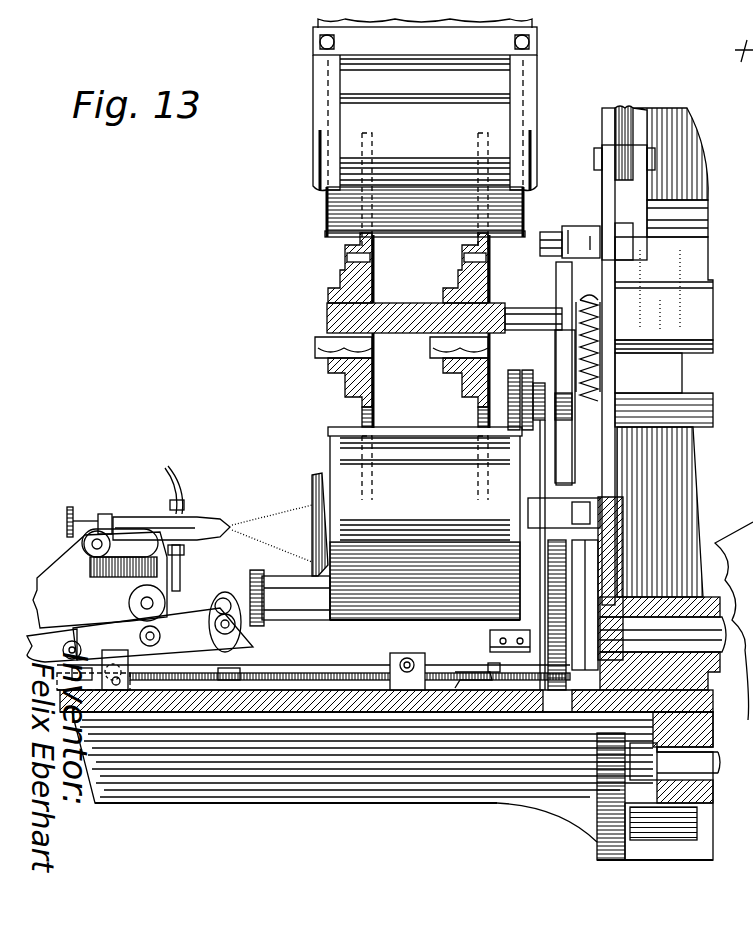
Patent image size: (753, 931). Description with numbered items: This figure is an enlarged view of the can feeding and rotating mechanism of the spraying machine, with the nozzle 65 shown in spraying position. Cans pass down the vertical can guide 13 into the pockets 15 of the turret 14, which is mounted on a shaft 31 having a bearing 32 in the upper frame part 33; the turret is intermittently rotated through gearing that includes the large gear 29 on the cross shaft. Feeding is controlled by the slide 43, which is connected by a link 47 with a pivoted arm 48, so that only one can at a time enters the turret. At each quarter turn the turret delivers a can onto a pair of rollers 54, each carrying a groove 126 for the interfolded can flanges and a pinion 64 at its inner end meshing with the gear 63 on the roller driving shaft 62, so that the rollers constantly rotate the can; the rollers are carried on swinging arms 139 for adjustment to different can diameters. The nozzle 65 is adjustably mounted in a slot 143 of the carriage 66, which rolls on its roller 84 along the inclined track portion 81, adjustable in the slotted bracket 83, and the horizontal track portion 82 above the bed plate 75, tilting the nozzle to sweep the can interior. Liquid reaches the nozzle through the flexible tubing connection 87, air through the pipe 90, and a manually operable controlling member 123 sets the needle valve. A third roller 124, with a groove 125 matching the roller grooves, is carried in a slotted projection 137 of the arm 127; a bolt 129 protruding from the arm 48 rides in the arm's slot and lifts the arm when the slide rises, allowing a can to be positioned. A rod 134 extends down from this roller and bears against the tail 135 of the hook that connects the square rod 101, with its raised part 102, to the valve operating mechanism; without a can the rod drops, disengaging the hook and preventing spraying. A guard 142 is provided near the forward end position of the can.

The vertical can guide 13 is at (322, 78).
The turret 14 is at (376, 246).
The pocket 15 is at (361, 418).
The large gear 29 is at (612, 812).
The shaft 31 is at (420, 325).
The bearing 32 is at (670, 305).
The upper frame part 33 is at (612, 384).
The slide 43 is at (625, 125).
The link 47 is at (612, 194).
The arm 48 is at (584, 242).
The roller 54 is at (285, 580).
The roller driving shaft 62 is at (646, 632).
The gear 63 is at (700, 678).
The pinion 64 is at (566, 578).
The nozzle 65 is at (132, 519).
The carriage 66 is at (56, 572).
The bed plate 75 is at (420, 714).
The inclined track portion 81 is at (172, 624).
The horizontal track portion 82 is at (48, 646).
The slotted bracket 83 is at (216, 600).
The roller 84 is at (140, 601).
The flexible tubing connection 87 is at (182, 496).
The pipe 90 is at (181, 566).
The square rod 101 is at (270, 672).
The raised part 102 is at (108, 664).
The controlling member 123 is at (72, 505).
The third roller 124 is at (513, 378).
The groove 125 is at (528, 378).
The groove 126 is at (505, 622).
The arm 127 is at (556, 278).
The bolt 129 is at (545, 253).
The rod 134 is at (538, 550).
The tail 135 is at (482, 676).
The slotted projection 137 is at (566, 470).
The swinging arm 139 is at (625, 582).
The guard 142 is at (314, 484).
The slot 143 is at (112, 540).